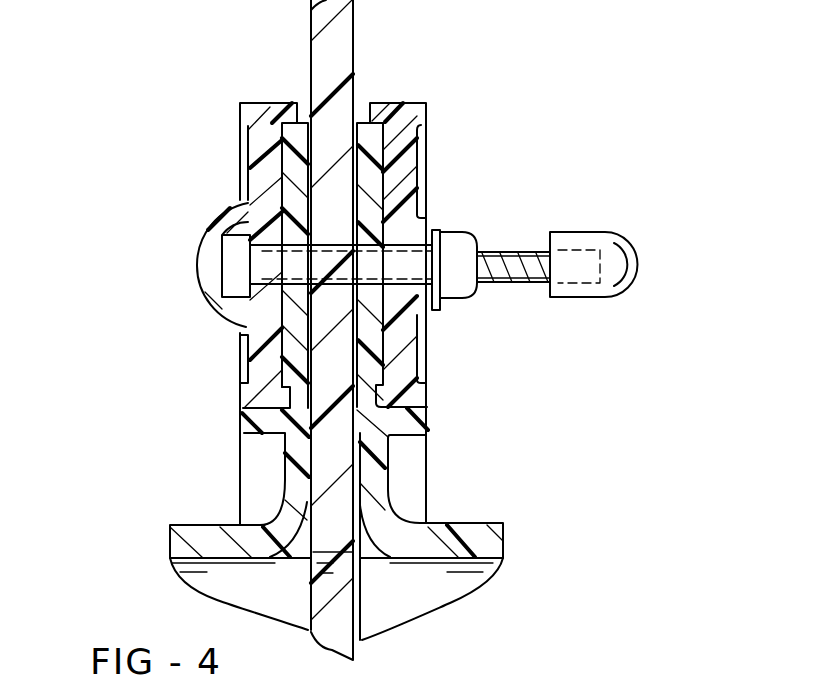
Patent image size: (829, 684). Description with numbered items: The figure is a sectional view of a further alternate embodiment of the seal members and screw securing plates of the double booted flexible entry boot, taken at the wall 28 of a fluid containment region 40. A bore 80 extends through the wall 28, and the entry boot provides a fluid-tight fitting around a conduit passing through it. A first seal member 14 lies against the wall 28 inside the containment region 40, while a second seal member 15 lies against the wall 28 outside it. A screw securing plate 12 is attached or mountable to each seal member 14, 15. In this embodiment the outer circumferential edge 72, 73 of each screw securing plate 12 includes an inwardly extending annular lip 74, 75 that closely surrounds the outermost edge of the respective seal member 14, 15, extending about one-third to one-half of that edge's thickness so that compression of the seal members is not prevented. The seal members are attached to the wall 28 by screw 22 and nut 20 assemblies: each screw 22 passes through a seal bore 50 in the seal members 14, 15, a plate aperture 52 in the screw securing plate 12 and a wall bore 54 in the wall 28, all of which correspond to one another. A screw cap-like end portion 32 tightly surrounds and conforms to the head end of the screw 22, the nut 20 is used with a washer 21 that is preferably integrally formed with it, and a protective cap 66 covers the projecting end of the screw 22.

The screw securing plate 12 is at (240, 146).
The first seal member 14 is at (428, 424).
The second seal member 15 is at (243, 413).
The nut 20 is at (468, 299).
The washer 21 is at (438, 309).
The screw 22 is at (508, 248).
The wall 28 is at (358, 36).
The screw cap-like end portion 32 is at (197, 268).
The fluid containment region 40 is at (612, 432).
The bore 50 is at (289, 248).
The aperture 52 is at (450, 245).
The bore 54 is at (335, 250).
The protective cap 66 is at (603, 231).
The outer circumferential edge 72 is at (428, 118).
The outer circumferential edge 73 is at (240, 113).
The annular lip 74 is at (395, 103).
The annular lip 75 is at (252, 103).
The bore 80 is at (352, 550).